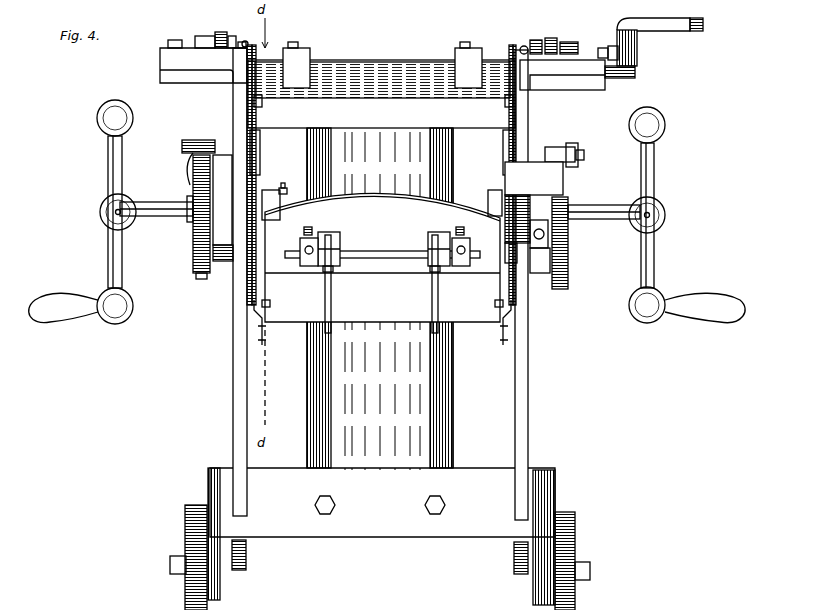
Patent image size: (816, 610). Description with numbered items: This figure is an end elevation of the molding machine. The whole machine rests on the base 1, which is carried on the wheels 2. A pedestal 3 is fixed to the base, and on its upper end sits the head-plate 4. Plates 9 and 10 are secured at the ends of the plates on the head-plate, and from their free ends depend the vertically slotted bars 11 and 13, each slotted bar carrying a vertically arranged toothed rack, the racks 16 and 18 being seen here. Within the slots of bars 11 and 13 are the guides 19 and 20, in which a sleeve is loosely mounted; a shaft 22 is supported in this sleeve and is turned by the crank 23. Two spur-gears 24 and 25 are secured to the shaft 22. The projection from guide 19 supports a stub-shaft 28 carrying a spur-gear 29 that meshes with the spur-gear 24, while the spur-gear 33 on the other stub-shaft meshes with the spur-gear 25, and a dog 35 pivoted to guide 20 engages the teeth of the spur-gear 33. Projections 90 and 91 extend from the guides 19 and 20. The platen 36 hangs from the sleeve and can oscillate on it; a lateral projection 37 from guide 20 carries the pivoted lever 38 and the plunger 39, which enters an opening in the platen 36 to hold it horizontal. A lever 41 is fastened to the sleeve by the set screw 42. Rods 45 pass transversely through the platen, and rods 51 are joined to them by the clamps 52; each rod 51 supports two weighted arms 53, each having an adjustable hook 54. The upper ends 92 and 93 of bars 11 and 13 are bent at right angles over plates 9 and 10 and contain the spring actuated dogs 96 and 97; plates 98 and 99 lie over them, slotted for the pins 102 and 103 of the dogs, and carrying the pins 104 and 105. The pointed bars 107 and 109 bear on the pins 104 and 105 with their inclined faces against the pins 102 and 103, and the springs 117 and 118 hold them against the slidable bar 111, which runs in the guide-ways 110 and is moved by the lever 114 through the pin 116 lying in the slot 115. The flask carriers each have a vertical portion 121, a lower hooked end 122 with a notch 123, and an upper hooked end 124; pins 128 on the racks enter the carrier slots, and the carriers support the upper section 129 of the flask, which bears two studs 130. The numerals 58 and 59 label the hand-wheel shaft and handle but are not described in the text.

The base 1 is at (400, 540).
The wheels 2 is at (185, 598).
The pedestal 3 is at (453, 400).
The head-plate 4 is at (381, 94).
The plate 9 is at (192, 83).
The plate 10 is at (586, 90).
The vertically slotted bar 11 is at (233, 370).
The vertically slotted bar 13 is at (528, 372).
The toothed rack 16 is at (240, 572).
The toothed rack 18 is at (522, 575).
The guide 19 is at (225, 261).
The guide 20 is at (540, 273).
The shaft 22 is at (604, 203).
The crank 23 is at (693, 300).
The spur-gear 24 is at (193, 237).
The spur-gear 25 is at (568, 236).
The stub-shaft 28 is at (190, 210).
The spur-gear 29 is at (200, 279).
The spur-gear 33 is at (568, 270).
The dog 35 is at (560, 147).
The platen 36 is at (492, 290).
The lateral projection 37 is at (515, 200).
The lever 38 is at (545, 262).
The plunger 39 is at (488, 208).
The lever 41 is at (283, 200).
The set screw 42 is at (282, 188).
The rods 45 is at (303, 250).
The rods 51 is at (386, 256).
The clamps 52 is at (310, 240).
The weighted arms 53 is at (340, 244).
The hook 54 is at (331, 295).
The shaft 58 is at (158, 208).
The handle 59 is at (85, 320).
The projection 90 is at (260, 150).
The projection 91 is at (503, 152).
The upper end 92 is at (160, 65).
The upper end 93 is at (607, 78).
The spring actuated dog 96 is at (254, 56).
The spring actuated dog 97 is at (509, 60).
The plate 98 is at (168, 47).
The plate 99 is at (637, 60).
The pin 102 is at (222, 32).
The pin 103 is at (550, 38).
The pin 104 is at (240, 42).
The pin 105 is at (533, 40).
The pointed bar 107 is at (200, 36).
The pointed bar 109 is at (575, 42).
The guide-ways 110 is at (330, 50).
The slidable bar 111 is at (392, 60).
The lever 114 is at (672, 18).
The slot 115 is at (600, 48).
The pin 116 is at (613, 46).
The spring 117 is at (248, 42).
The spring 118 is at (520, 48).
The vertical portion 121 is at (254, 306).
The lower hooked end 122 is at (260, 341).
The notch 123 is at (260, 328).
The upper hooked end 124 is at (250, 92).
The pins 128 is at (262, 103).
The upper section of the flask 129 is at (268, 338).
The studs 130 is at (270, 303).